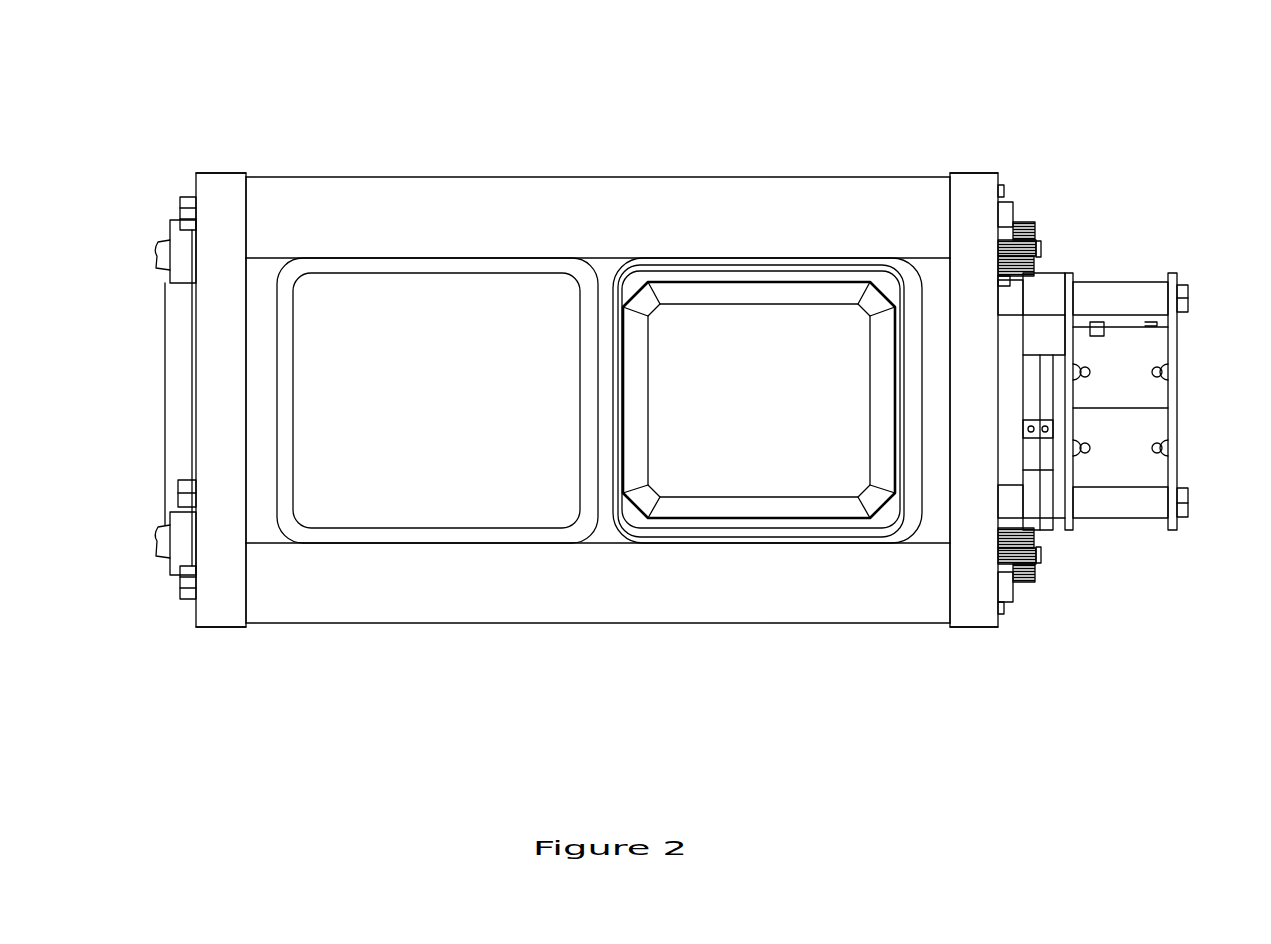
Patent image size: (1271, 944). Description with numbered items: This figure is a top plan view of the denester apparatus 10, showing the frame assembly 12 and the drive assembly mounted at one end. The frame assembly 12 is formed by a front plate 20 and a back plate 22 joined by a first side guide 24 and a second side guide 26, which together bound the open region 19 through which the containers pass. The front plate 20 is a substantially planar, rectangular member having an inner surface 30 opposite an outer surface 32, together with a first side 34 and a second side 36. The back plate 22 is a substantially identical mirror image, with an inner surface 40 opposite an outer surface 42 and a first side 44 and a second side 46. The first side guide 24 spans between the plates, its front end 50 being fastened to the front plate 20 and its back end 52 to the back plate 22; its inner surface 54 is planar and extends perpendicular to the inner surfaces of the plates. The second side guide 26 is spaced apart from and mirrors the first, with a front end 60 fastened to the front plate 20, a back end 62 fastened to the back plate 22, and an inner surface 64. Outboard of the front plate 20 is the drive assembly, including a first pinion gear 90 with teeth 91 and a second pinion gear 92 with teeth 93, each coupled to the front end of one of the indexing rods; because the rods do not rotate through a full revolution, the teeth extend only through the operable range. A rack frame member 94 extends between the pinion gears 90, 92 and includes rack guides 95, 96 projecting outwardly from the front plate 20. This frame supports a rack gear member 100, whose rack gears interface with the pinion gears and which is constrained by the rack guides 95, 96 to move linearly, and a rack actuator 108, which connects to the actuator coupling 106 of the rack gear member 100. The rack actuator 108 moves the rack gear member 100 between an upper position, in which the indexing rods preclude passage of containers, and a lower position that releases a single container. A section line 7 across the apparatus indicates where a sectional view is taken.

The section line 7- 7 is at (817, 165).
The denester apparatus 10 is at (891, 80).
The frame assembly 12 is at (613, 171).
The window frame 19 is at (270, 270).
The front plate 20 is at (980, 168).
The back plate 22 is at (232, 172).
The first side guide 24 is at (620, 628).
The second side guide 26 is at (730, 176).
The inner surface 30 is at (949, 192).
The outer surface 32 is at (1002, 192).
The first side 34 is at (965, 633).
The second side 36 is at (963, 168).
The inner surface 40 is at (247, 202).
The outer surface 42 is at (188, 272).
The first side 44 is at (236, 631).
The second side 46 is at (207, 168).
The front end 50 is at (949, 603).
The back end 52 is at (247, 612).
The inner surface 54 is at (462, 546).
The front end 60 is at (949, 235).
The back end 62 is at (247, 230).
The inner surface 64 is at (460, 257).
The first pinion gear 90 is at (1018, 590).
The teeth 91 is at (1035, 577).
The second pinion gear 92 is at (1033, 244).
The teeth 93 is at (1028, 224).
The rack frame member 94 is at (1152, 276).
The rack guide 95 is at (1052, 531).
The rack guide 96 is at (1050, 274).
The rack gear member 100 is at (1018, 508).
The actuator coupling 106 is at (1041, 352).
The rack actuator 108 is at (1060, 392).